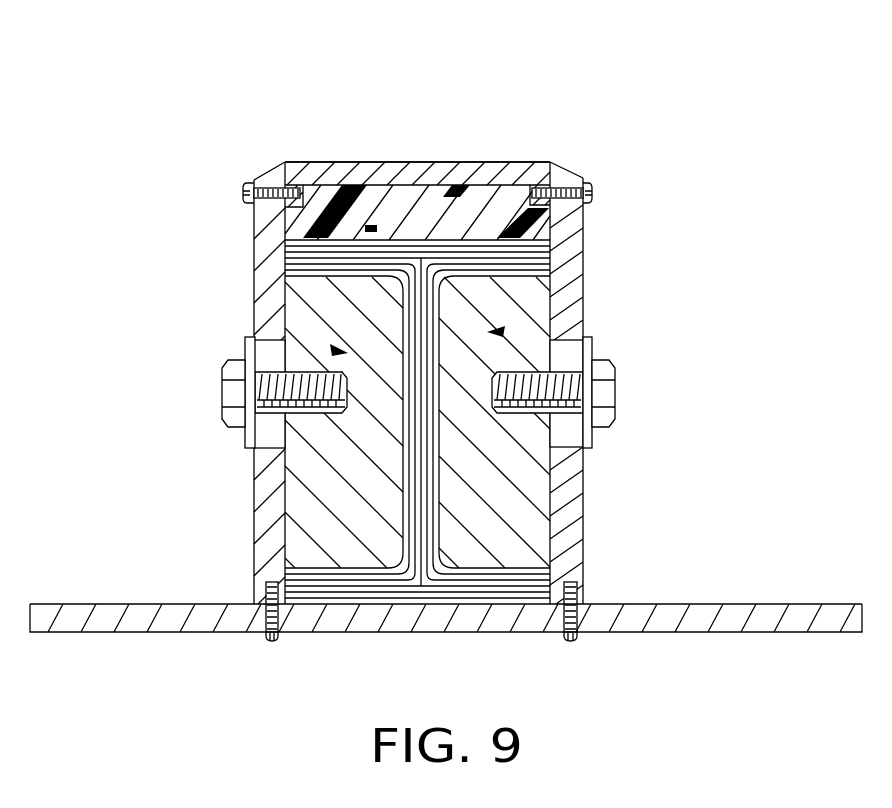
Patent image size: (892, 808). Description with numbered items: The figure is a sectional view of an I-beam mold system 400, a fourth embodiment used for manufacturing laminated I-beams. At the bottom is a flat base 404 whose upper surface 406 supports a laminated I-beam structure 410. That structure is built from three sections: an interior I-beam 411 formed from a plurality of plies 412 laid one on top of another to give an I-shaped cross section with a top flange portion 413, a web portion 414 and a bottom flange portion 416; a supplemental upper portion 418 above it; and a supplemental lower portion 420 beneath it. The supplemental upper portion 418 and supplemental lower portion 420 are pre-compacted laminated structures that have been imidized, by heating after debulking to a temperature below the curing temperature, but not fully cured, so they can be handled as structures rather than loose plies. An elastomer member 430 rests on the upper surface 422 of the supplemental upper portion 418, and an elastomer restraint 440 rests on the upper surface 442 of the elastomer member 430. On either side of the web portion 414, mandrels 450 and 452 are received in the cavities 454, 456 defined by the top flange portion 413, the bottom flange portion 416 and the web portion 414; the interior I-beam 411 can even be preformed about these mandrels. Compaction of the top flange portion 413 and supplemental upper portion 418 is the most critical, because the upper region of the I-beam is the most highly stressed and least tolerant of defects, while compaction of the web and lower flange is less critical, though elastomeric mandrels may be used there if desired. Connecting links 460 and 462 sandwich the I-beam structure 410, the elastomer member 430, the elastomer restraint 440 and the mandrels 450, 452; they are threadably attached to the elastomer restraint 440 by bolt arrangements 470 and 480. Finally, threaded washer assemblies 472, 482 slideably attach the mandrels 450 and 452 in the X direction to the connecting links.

The I-beam mold system 400 is at (560, 68).
The flat base 404 is at (178, 625).
The upper surface 406 is at (83, 604).
The laminated I-beam structure 410 is at (552, 290).
The interior I-beam 411 is at (402, 462).
The plies 412 is at (403, 433).
The top flange portion 413 is at (288, 270).
The web portion 414 is at (397, 330).
The bottom flange portion 416 is at (295, 558).
The supplemental upper portion 418 is at (550, 235).
The supplemental lower portion 420 is at (353, 596).
The upper surface 422 is at (463, 248).
The elastomer member 430 is at (323, 190).
The elastomer restraint 440 is at (470, 162).
The upper surface 442 is at (488, 183).
The mandrel 450 is at (573, 513).
The mandrel 452 is at (293, 315).
The cavity 454 is at (500, 332).
The cavity 456 is at (335, 351).
The connecting link 460 is at (570, 168).
The connecting link 462 is at (272, 168).
The bolt arrangement 470 is at (594, 195).
The threaded washer assembly 472 is at (615, 393).
The bolt arrangement 480 is at (242, 193).
The threaded washer assembly 482 is at (222, 394).